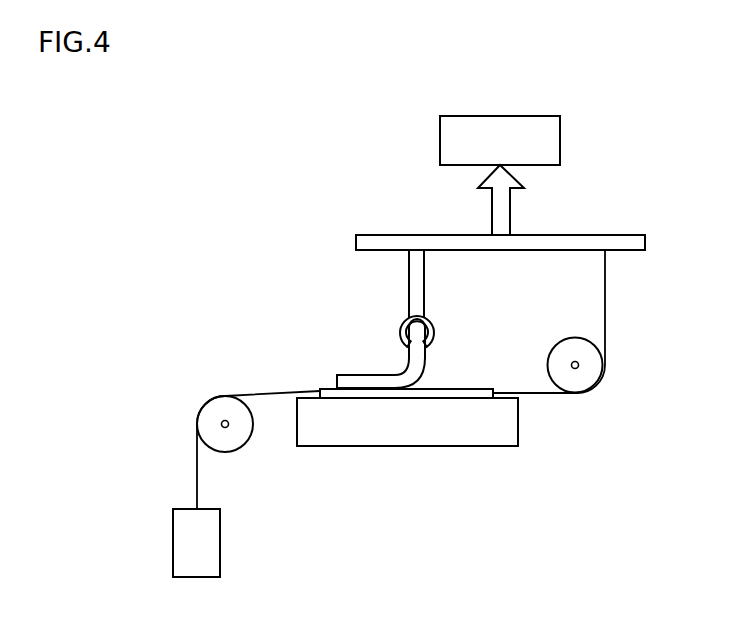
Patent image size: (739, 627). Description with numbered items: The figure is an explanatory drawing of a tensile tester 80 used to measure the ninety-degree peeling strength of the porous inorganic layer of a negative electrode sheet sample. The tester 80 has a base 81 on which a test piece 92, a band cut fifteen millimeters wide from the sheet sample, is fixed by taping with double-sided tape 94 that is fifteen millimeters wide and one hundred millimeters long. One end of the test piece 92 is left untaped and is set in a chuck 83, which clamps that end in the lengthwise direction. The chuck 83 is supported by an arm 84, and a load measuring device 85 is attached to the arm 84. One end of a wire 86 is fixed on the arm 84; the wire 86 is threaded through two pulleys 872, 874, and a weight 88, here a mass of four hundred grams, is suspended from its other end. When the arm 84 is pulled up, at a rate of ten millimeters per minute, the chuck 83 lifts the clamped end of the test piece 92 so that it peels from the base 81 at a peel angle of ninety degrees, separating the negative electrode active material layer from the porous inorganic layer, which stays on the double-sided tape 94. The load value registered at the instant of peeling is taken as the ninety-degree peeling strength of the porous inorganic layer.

The tensile tester 80 is at (242, 172).
The load measuring device 85 is at (555, 133).
The arm 84 is at (388, 235).
The chuck 83 is at (400, 327).
The test piece 92 is at (340, 373).
The double-sided tape 94 is at (460, 389).
The base 81 is at (487, 440).
The wire 86 is at (605, 313).
The pulley 872 is at (570, 347).
The pulley 874 is at (232, 440).
The weight 88 is at (175, 557).